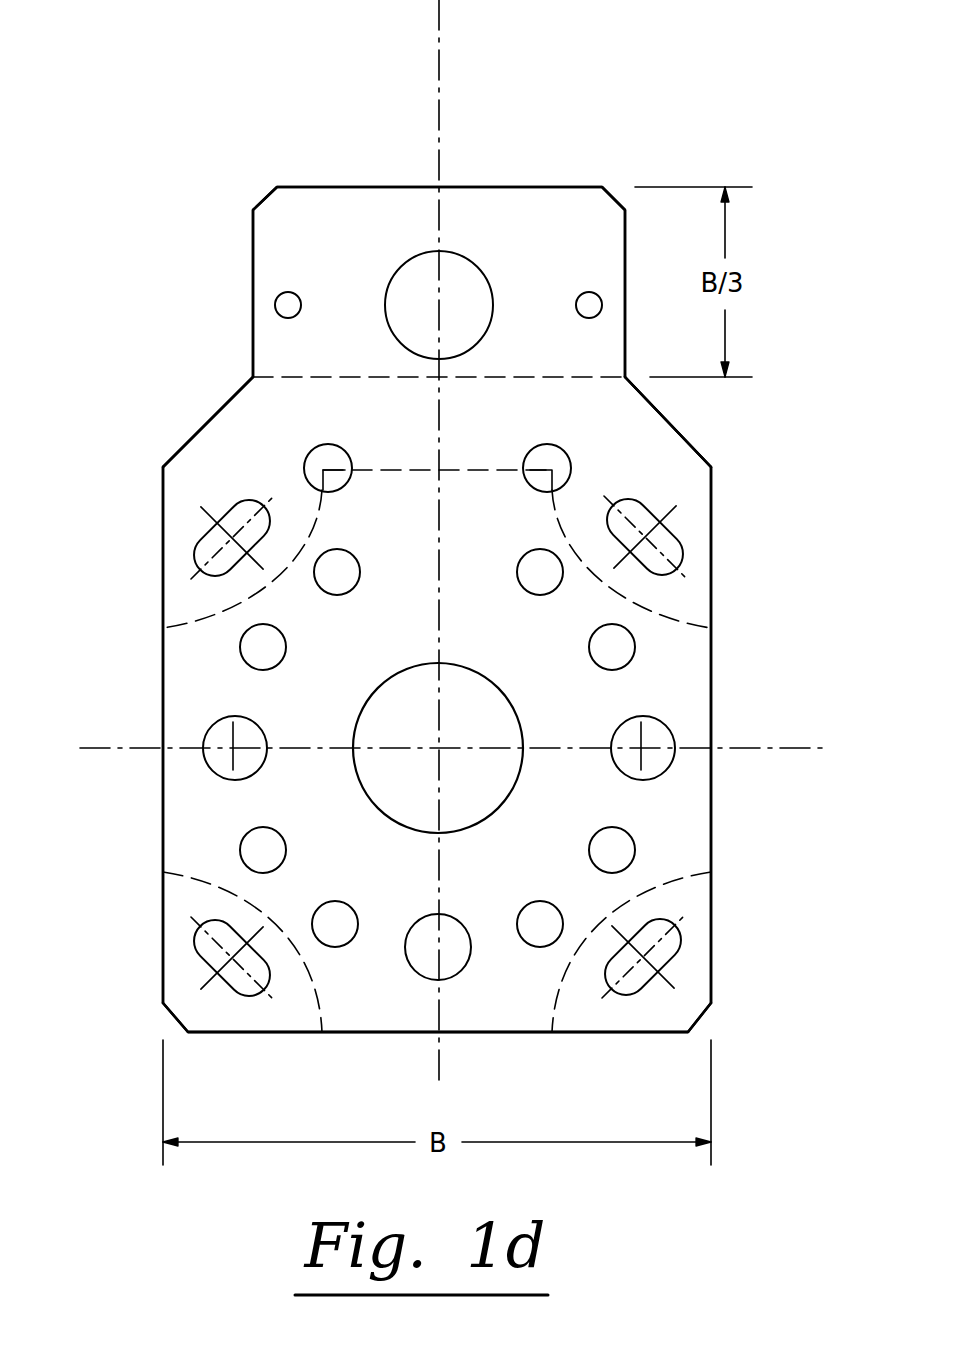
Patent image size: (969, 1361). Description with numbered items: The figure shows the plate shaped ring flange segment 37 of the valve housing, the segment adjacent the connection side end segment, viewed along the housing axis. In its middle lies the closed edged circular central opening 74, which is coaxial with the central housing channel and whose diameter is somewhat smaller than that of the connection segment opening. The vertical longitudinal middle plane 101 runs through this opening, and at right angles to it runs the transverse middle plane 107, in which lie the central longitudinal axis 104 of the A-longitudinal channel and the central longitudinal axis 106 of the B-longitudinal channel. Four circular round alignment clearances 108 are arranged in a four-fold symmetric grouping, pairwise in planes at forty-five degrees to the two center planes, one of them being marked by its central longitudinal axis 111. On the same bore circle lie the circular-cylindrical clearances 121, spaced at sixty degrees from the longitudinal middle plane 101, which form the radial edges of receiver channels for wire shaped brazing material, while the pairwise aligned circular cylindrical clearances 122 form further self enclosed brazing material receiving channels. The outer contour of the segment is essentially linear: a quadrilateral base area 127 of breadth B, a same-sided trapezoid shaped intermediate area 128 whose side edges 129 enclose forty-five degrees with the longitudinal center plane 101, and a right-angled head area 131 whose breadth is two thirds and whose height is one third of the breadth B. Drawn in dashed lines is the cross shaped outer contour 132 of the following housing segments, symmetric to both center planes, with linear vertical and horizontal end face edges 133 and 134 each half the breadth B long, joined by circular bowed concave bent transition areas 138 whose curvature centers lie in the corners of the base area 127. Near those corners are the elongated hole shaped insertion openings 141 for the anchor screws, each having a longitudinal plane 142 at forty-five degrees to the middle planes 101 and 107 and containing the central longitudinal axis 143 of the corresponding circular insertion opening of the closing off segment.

The ring flange segment 37 is at (312, 187).
The central opening 74 is at (510, 698).
The vertical longitudinal middle plane 101 is at (440, 28).
The central longitudinal axis of the A-longitudinal channel 104 is at (218, 761).
The central longitudinal axis of the B-longitudinal channel 106 is at (655, 768).
The transverse middle plane 107 is at (108, 745).
The alignment clearances 108 is at (520, 570).
The central longitudinal axis of alignment clearance 111 is at (465, 968).
The circular-cylindrical clearances 121 is at (285, 648).
The circular cylindrical clearances 122 is at (540, 462).
The quadrilateral base area 127 is at (522, 1010).
The trapezoid shaped intermediate area 128 is at (657, 432).
The side edges 129 is at (248, 392).
The head area 131 is at (290, 208).
The outer contours 132 is at (668, 618).
The vertical end face edges 133 is at (163, 668).
The horizontal end face edges 134 is at (462, 529).
The concave bent transition areas 138 is at (208, 875).
The elongated hole shaped insertion openings 141 is at (218, 532).
The longitudinal plane of the insertion opening 142 is at (270, 490).
The central longitudinal axis of the insertion openings 143 is at (228, 540).